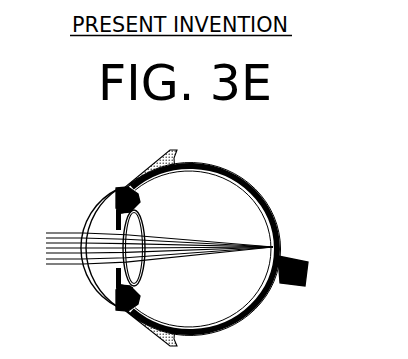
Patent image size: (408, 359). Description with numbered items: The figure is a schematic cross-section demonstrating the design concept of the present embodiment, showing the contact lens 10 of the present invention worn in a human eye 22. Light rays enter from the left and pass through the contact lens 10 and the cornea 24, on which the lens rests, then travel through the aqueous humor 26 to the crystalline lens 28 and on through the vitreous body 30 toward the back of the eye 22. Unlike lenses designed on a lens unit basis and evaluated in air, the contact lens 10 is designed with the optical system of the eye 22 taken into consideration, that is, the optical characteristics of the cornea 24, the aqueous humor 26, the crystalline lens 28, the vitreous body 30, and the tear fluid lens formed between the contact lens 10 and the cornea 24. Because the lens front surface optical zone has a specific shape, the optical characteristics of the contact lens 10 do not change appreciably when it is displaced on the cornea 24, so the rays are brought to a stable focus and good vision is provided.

The contact lens 10 is at (82, 221).
The human eye 22 is at (262, 158).
The cornea 24 is at (105, 292).
The aqueous humor 26 is at (106, 218).
The crystalline lens 28 is at (141, 223).
The vitreous body 30 is at (255, 206).